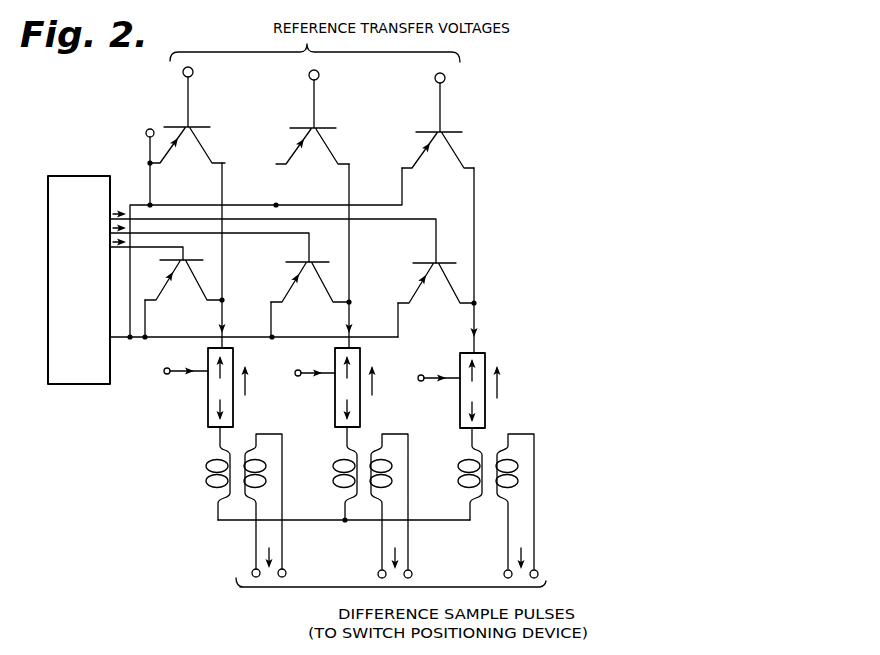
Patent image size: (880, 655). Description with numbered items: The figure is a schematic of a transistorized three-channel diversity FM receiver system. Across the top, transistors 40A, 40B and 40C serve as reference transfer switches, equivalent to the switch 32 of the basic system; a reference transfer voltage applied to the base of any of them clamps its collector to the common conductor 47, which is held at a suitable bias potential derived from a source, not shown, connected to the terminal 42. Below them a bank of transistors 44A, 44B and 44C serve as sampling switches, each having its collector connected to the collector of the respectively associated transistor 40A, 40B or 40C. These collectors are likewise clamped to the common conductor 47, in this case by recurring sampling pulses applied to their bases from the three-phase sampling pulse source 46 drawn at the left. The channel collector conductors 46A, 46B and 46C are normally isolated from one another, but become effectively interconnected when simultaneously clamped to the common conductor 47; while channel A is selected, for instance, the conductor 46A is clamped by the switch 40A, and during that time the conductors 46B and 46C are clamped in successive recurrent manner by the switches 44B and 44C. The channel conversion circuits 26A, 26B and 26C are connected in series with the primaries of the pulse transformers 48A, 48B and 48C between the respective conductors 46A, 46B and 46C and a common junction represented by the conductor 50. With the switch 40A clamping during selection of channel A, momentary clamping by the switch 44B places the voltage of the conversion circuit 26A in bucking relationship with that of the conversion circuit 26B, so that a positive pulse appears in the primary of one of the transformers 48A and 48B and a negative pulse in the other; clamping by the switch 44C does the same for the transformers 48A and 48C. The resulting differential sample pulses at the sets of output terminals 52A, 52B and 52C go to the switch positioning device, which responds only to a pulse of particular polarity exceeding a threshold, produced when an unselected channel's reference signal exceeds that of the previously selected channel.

The switch 32 is at (475, 117).
The transistor 40A is at (189, 131).
The transistor 40B is at (315, 132).
The transistor 40C is at (441, 136).
The terminal 42 is at (146, 133).
The common conductor 47 is at (206, 204).
The three-phase sampling pulse source 46 is at (48, 329).
The transistor 44A is at (186, 258).
The transistor 44B is at (312, 260).
The transistor 44C is at (439, 262).
The channel collector conductor 46A is at (223, 320).
The channel collector conductor 46B is at (350, 322).
The channel collector conductor 46C is at (476, 325).
The channel conversion circuit 26A is at (208, 398).
The channel conversion circuit 26B is at (335, 397).
The channel conversion circuit 26C is at (460, 396).
The pulse transformer 48A is at (233, 448).
The pulse transformer 48B is at (361, 449).
The pulse transformer 48C is at (485, 449).
The conductor 50 is at (309, 522).
The output terminals 52A is at (258, 578).
The output terminals 52B is at (384, 579).
The output terminals 52C is at (510, 579).